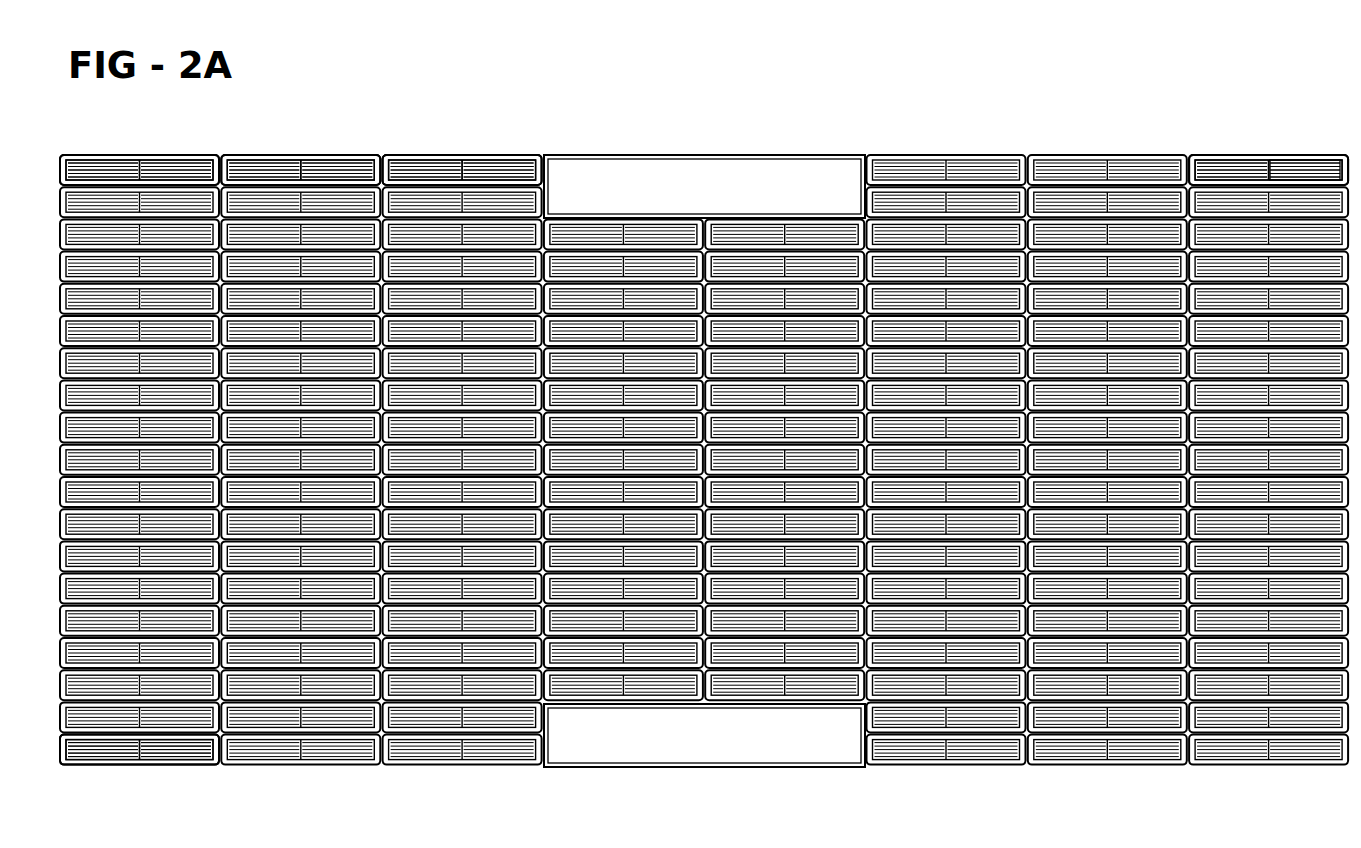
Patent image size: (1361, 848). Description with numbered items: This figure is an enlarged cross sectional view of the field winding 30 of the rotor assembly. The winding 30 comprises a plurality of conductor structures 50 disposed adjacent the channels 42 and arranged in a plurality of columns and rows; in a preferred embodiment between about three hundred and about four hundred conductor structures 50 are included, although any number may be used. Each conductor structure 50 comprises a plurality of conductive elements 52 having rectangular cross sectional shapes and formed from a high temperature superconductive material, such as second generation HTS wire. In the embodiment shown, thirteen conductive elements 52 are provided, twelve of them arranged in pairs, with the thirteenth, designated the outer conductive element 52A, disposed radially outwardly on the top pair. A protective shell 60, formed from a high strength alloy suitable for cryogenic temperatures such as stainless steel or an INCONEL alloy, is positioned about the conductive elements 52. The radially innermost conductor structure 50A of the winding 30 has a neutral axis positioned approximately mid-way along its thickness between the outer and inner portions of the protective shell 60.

The winding 30 is at (1094, 128).
The channels 42 is at (704, 461).
The conductor structures 50 is at (412, 146).
The radially innermost conductor structure 50A is at (148, 772).
The protective shell 60 is at (1245, 153).
The outer conductive element 52A is at (1281, 162).
The conductive elements 52 is at (1320, 168).